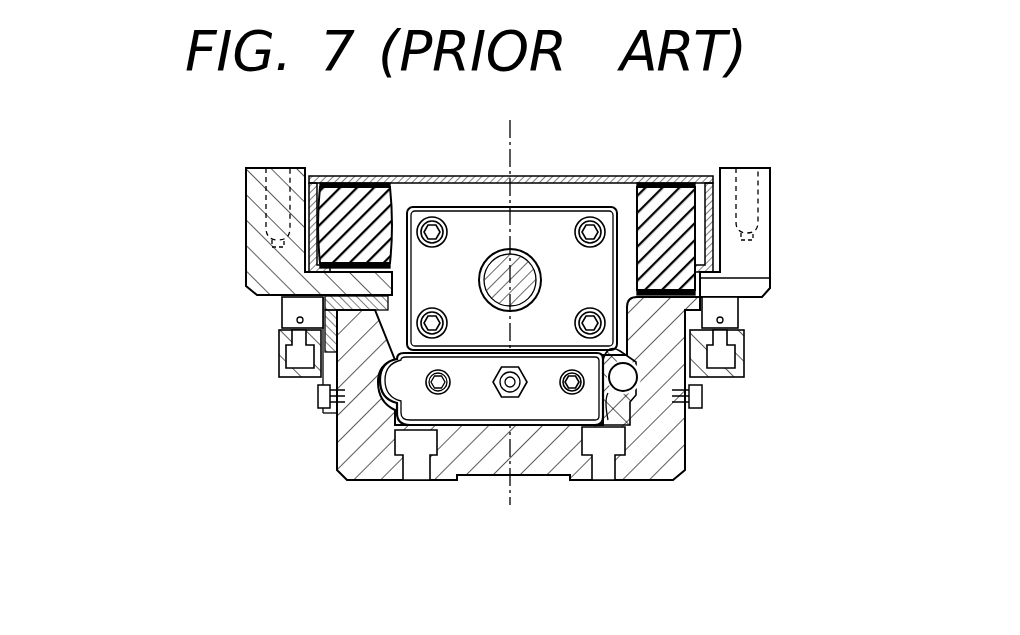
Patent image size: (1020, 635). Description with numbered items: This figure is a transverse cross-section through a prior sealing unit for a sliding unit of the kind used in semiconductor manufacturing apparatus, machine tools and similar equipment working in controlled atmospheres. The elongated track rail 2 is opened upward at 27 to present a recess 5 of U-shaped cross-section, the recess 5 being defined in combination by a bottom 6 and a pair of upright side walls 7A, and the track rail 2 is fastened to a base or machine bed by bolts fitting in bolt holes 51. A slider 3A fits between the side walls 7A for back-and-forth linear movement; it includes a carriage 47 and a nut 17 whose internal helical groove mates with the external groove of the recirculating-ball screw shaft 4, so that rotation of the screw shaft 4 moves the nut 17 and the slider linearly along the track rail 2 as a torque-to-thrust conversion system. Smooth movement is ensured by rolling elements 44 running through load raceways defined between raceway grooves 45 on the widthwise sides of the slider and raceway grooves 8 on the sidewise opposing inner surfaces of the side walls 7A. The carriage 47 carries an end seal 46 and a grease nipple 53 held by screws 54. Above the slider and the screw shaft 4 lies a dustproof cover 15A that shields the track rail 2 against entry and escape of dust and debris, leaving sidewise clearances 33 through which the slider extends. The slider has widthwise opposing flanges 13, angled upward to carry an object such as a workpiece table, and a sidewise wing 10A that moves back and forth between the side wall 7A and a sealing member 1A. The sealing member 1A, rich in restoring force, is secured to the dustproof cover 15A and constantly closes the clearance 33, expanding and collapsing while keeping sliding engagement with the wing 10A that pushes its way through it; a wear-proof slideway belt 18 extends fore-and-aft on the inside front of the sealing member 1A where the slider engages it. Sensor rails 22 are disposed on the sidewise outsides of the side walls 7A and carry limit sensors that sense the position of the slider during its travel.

The sealing member 1A is at (350, 177).
The track rail 2 is at (340, 441).
The slider 3A is at (305, 377).
The recirculating-ball screw shaft 4 is at (505, 267).
The recess 5 is at (490, 428).
The bottom 6 is at (562, 455).
The side wall 7A is at (697, 383).
The raceway groove 8 is at (658, 368).
The wing 10A is at (330, 282).
The flange 13 is at (262, 244).
The dustproof cover 15A is at (540, 177).
The nut 17 is at (464, 230).
The wear-proof slideway belt 18 is at (360, 268).
The sensor rail 22 is at (285, 320).
The upward opening 27 is at (745, 373).
The clearance 33 is at (713, 278).
The rolling element 44 is at (632, 396).
The raceway groove 45 is at (626, 395).
The end seal 46 is at (475, 405).
The carriage 47 is at (549, 402).
The bolt hole 51 is at (613, 455).
The grease nipple 53 is at (525, 432).
The screw 54 is at (435, 396).